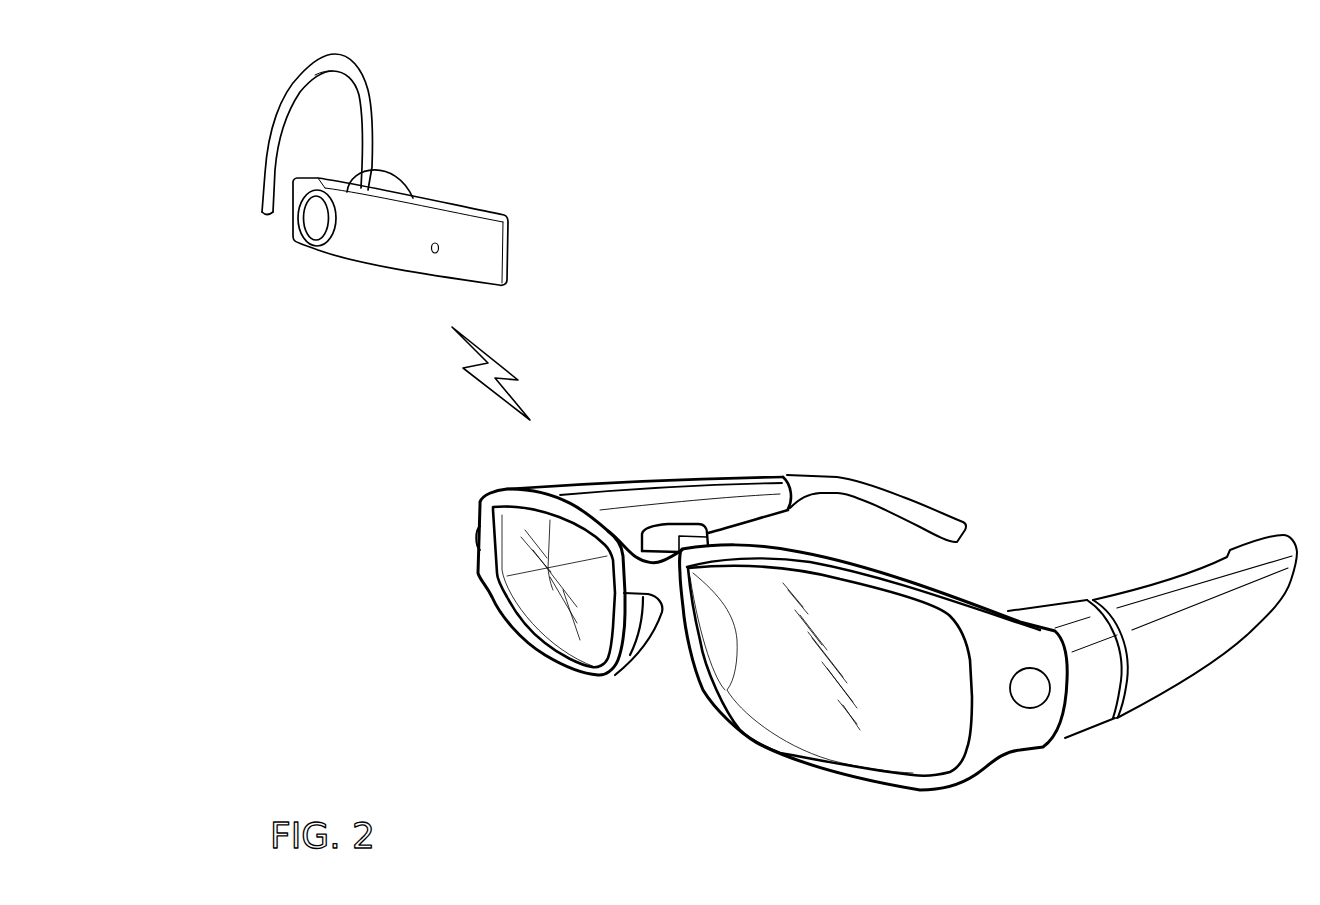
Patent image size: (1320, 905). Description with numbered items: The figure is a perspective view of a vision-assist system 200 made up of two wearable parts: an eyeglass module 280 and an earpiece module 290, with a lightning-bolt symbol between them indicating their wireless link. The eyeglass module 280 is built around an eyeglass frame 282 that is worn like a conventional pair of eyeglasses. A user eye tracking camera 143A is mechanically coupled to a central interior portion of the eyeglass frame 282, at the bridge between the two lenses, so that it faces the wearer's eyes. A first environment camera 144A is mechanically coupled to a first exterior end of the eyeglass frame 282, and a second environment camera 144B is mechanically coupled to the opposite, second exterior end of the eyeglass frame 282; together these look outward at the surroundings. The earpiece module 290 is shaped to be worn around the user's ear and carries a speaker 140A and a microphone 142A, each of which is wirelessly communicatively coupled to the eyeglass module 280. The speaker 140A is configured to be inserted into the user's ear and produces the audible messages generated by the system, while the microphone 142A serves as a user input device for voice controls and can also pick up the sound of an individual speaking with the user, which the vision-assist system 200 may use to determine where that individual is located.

The vision-assist system 200 is at (708, 424).
The earpiece module 290 is at (314, 186).
The speaker 140A is at (400, 182).
The microphone 142A is at (398, 265).
The eyeglass module 280 is at (844, 583).
The eyeglass frame 282 is at (993, 607).
The user eye tracking camera 143A is at (677, 528).
The first environment camera 144A is at (478, 538).
The second environment camera 144B is at (1038, 700).